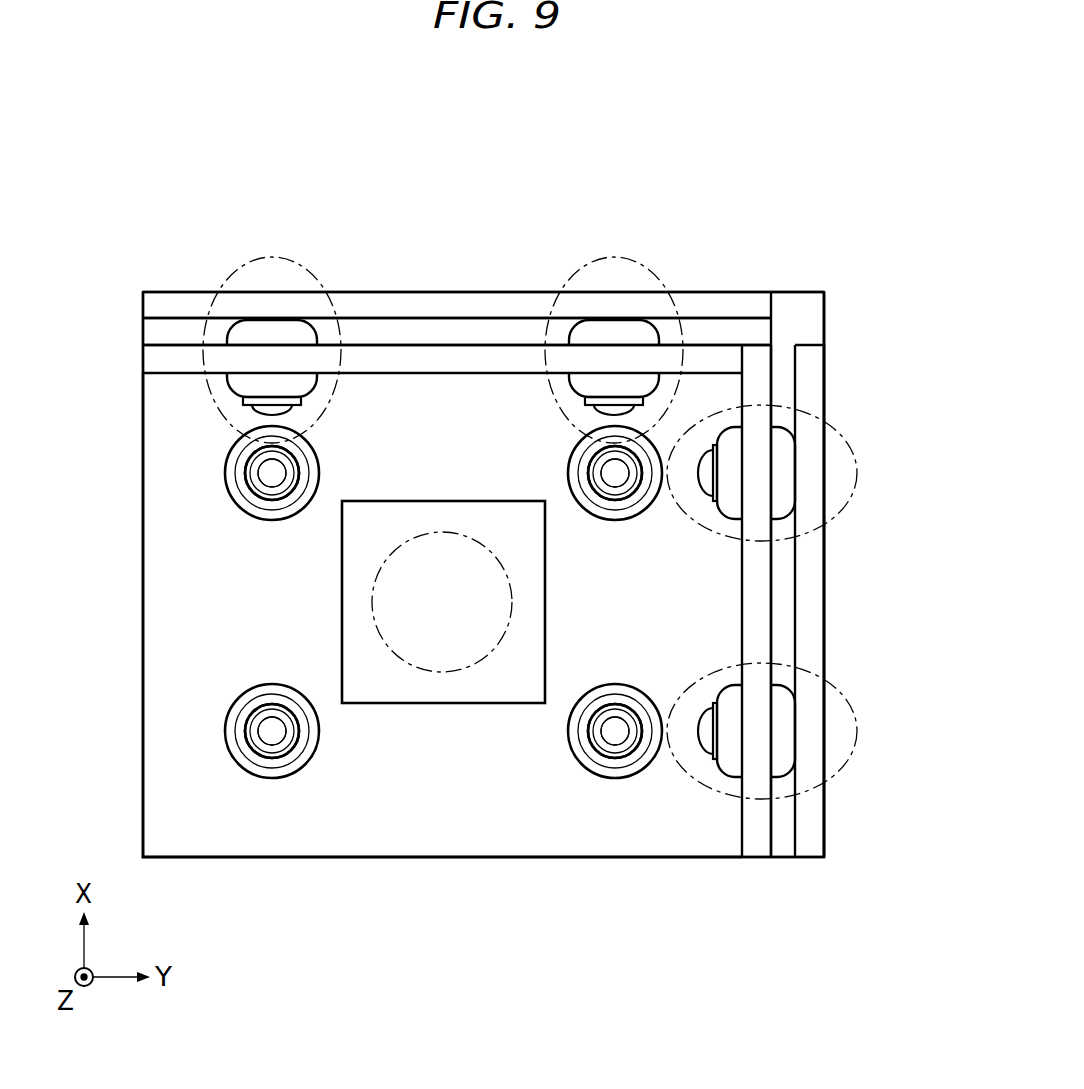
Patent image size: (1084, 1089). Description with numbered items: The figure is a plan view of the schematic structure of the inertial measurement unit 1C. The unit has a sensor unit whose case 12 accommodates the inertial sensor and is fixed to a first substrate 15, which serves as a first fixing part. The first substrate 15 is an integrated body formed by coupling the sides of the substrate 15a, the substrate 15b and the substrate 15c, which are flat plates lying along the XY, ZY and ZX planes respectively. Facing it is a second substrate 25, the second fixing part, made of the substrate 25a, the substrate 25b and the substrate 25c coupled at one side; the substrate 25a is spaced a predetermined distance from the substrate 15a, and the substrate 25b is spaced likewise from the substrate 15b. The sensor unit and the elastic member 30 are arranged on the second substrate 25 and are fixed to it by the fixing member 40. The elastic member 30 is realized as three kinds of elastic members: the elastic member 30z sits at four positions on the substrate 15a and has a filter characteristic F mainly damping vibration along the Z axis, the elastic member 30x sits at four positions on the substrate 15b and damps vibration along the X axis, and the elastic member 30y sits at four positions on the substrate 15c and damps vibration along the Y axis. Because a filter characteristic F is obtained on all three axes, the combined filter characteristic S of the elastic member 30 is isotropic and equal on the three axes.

The inertial measurement unit 1C is at (882, 191).
The case 12 is at (458, 613).
The first substrate 15 is at (168, 551).
The substrate 15a is at (150, 436).
The substrate 15b is at (150, 361).
The substrate 15c is at (758, 849).
The second substrate 25 is at (416, 336).
The substrate 25a is at (812, 316).
The substrate 25b is at (527, 301).
The substrate 25c is at (812, 390).
The elastic member 30 is at (280, 178).
The elastic member 30x is at (272, 326).
The elastic member 30y is at (783, 482).
The elastic member 30z is at (272, 521).
The fixing member 40 is at (262, 472).
The combined filter characteristic S is at (438, 531).
The filter characteristic F is at (310, 267).